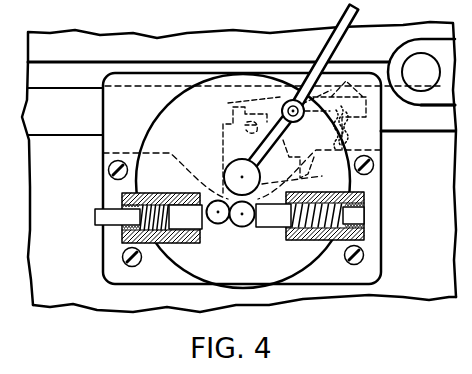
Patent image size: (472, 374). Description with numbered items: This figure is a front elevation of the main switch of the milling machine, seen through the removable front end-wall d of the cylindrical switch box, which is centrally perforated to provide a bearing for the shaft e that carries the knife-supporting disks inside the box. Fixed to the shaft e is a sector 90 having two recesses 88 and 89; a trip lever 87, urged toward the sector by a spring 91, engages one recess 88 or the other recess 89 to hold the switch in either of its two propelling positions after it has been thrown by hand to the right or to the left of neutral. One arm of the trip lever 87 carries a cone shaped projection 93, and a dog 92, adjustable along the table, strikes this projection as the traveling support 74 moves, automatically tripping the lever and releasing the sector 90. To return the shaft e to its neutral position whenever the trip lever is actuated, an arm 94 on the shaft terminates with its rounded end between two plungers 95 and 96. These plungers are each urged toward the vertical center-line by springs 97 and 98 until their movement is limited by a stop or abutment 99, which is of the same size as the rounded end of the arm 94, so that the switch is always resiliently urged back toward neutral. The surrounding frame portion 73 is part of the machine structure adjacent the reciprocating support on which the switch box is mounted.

The traveling support 74 is at (160, 44).
The body housing lower portion 73 is at (438, 292).
The dog 92 is at (421, 91).
The front end-wall d is at (383, 186).
The sector 90 is at (221, 128).
The trip lever 87 is at (236, 104).
The recess 88 is at (248, 131).
The recess 89 is at (296, 156).
The spring 91 is at (352, 125).
The spring 97 is at (157, 196).
The plunger 95 is at (185, 217).
The spring 98 is at (325, 195).
The plunger 96 is at (273, 215).
The cone shaped projection 93 is at (350, 84).
The shaft e is at (243, 178).
The arm 94 is at (220, 224).
The stop or abutment 99 is at (246, 226).